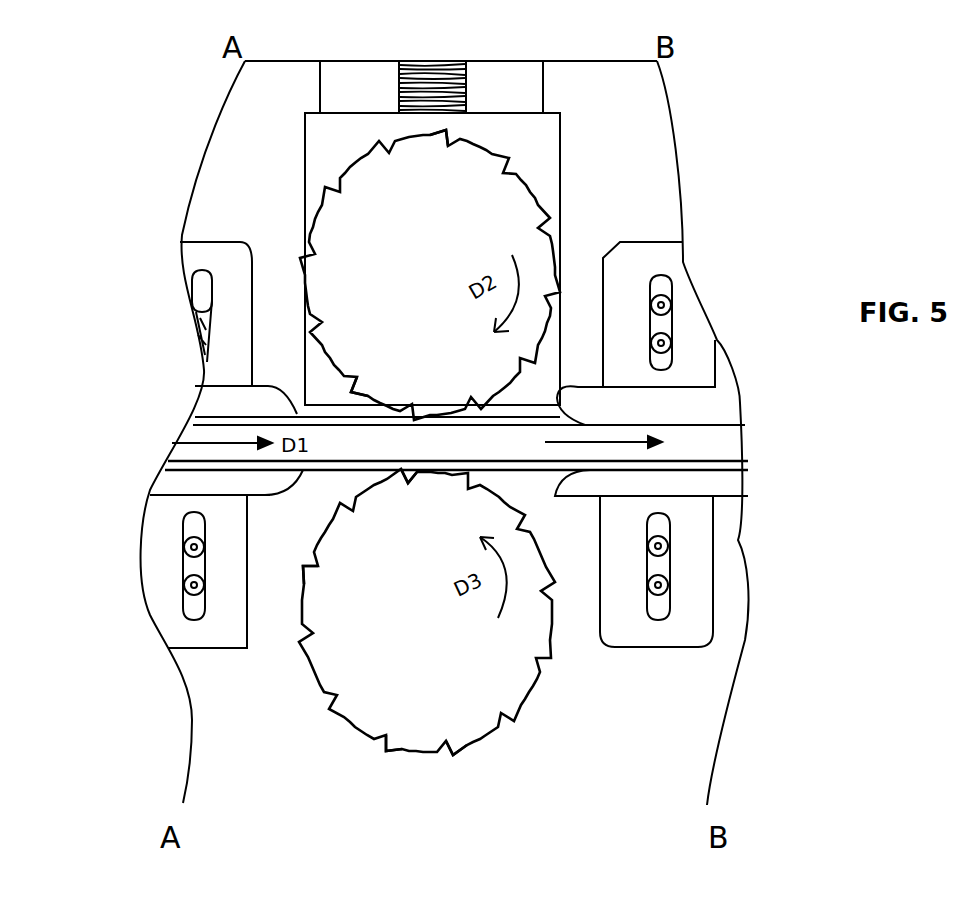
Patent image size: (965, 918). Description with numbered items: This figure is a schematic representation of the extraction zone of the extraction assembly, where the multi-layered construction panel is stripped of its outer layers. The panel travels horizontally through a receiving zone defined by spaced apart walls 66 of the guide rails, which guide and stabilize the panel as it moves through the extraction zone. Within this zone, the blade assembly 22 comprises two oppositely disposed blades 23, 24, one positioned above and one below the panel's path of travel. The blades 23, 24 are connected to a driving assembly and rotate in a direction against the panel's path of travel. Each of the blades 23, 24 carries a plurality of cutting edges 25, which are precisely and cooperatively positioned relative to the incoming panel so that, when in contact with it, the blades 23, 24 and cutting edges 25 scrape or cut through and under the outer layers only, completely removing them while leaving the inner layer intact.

The blade assembly 22 is at (572, 178).
The blade 23 is at (530, 207).
The blade 24 is at (392, 732).
The cutting edges 25 is at (376, 158).
The spaced apart walls 66 is at (213, 402).